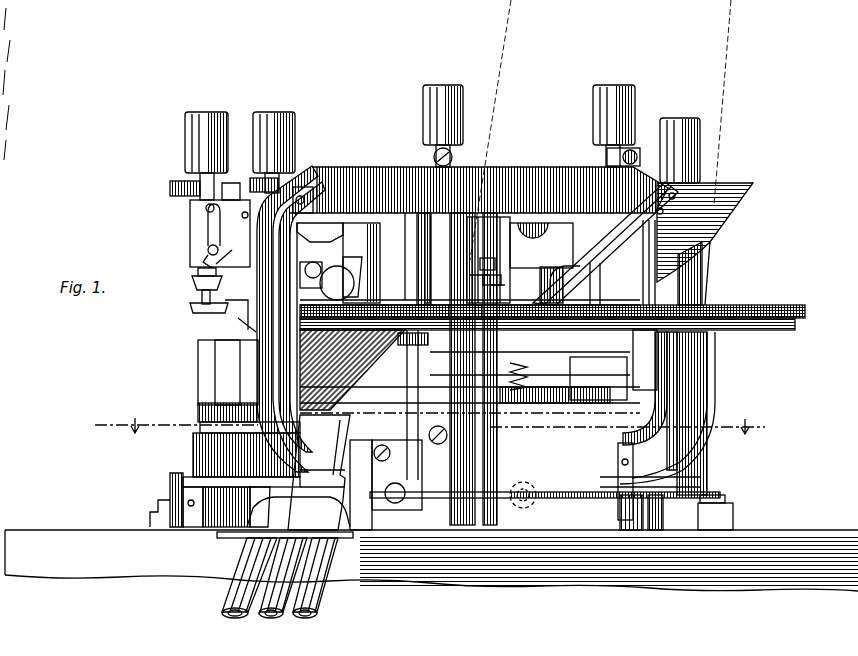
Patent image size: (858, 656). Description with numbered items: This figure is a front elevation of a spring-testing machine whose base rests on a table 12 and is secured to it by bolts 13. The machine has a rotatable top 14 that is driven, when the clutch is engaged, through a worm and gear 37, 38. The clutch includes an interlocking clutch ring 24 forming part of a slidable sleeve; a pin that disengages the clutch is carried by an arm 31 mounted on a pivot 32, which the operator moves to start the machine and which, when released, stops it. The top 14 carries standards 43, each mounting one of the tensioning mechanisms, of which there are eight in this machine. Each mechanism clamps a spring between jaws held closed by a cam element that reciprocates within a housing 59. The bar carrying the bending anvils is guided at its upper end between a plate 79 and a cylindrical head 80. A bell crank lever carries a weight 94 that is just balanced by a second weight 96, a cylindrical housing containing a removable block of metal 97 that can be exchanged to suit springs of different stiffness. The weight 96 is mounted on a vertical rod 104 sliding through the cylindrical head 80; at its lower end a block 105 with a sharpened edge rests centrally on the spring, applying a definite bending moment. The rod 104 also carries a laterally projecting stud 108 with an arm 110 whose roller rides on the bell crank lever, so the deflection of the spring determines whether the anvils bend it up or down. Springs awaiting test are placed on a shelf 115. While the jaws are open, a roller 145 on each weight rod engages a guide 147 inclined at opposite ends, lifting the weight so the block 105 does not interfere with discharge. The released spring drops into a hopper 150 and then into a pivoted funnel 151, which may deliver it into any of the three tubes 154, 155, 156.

The table 12 is at (590, 570).
The bolts 13 is at (722, 504).
The rotatable top 14 is at (200, 410).
The clutch ring 24 is at (437, 427).
The arm 31 is at (702, 495).
The pivot 32 is at (655, 532).
The worm 37 is at (536, 500).
The gear 38 is at (510, 488).
The standards 43 is at (380, 247).
The housing 59 is at (360, 233).
The plate 79 is at (228, 225).
The cylindrical head 80 is at (196, 243).
The weight 94 is at (230, 312).
The second weight 96 is at (185, 158).
The removable block of metal 97 is at (198, 280).
The vertical rod 104 is at (170, 188).
The block 105 is at (198, 306).
The stud 108 is at (205, 252).
The arm 110 is at (233, 248).
The shelf 115 is at (755, 305).
The roller 145 is at (186, 198).
The guide 147 is at (493, 182).
The hopper 150 is at (352, 370).
The funnel 151 is at (319, 472).
The tube 154 is at (318, 597).
The tube 155 is at (275, 618).
The tube 156 is at (232, 608).